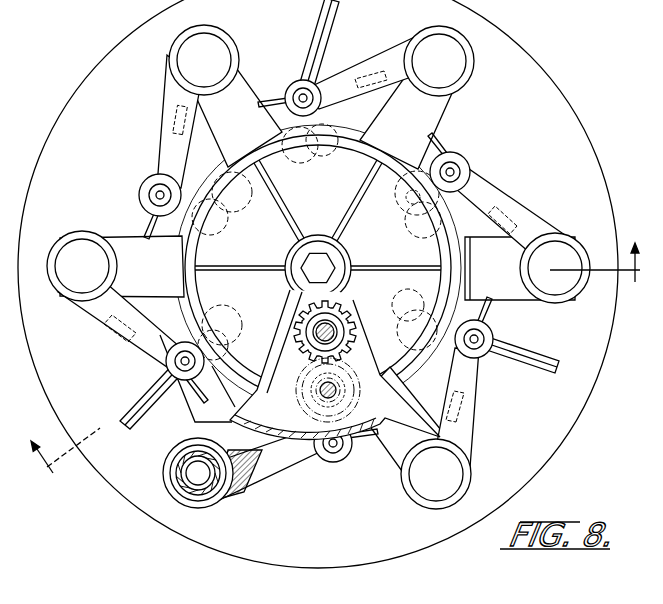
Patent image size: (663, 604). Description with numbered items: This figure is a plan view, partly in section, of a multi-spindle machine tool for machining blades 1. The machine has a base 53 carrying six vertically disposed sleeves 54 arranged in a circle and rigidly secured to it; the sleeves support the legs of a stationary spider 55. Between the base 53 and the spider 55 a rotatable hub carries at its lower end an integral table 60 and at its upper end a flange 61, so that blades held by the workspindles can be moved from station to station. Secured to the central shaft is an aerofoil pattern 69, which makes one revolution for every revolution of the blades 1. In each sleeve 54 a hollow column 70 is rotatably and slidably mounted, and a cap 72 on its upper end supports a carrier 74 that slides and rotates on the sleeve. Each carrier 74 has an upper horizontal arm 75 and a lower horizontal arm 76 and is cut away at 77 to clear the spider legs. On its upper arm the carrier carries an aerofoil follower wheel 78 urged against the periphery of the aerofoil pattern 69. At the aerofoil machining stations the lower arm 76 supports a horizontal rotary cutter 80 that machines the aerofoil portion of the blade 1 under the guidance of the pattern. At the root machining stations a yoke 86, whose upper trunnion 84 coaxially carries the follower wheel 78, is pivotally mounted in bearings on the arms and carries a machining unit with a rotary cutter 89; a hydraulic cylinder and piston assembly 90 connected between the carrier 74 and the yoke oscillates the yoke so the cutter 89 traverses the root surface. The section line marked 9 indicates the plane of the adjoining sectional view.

The blade 1 is at (408, 200).
The section line 9- 9 is at (328, 341).
The base 53 is at (570, 423).
The sleeves 54 is at (200, 505).
The spider 55 is at (537, 320).
The table 60 is at (275, 97).
The flange 61 is at (290, 80).
The aerofoil pattern 69 is at (173, 255).
The column 70 is at (180, 472).
The cap 72 is at (427, 480).
The carrier 74 is at (183, 505).
The upper horizontal arm 75 is at (110, 327).
The lower horizontal arm 76 is at (275, 472).
The cut away 77 is at (178, 443).
The aerofoil follower wheel 78 is at (458, 157).
The rotary cutter 80 is at (472, 168).
The upper trunnion 84 is at (178, 381).
The yoke 86 is at (127, 407).
The rotary cutter 89 is at (318, 268).
The hydraulic cylinder and piston assembly 90 is at (178, 360).